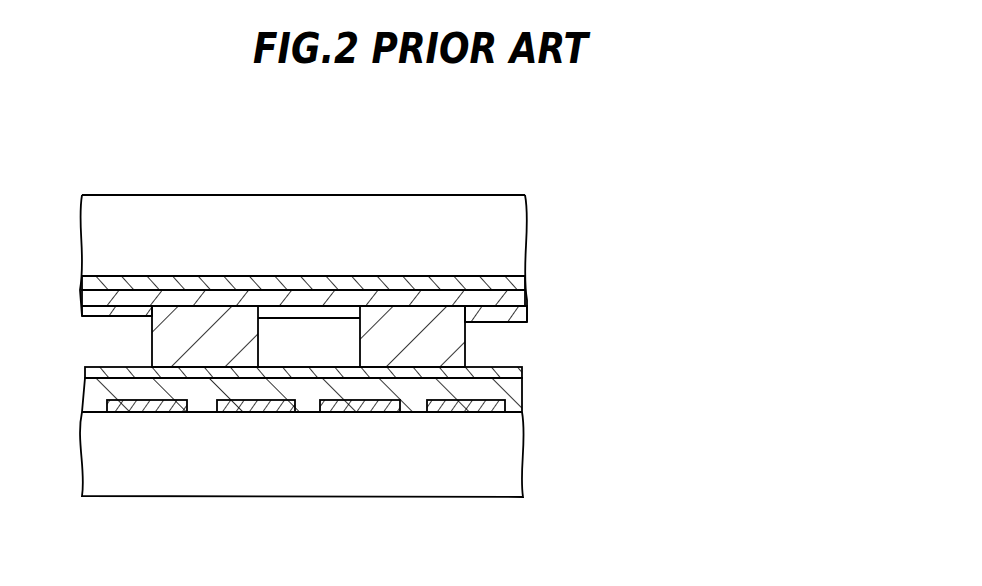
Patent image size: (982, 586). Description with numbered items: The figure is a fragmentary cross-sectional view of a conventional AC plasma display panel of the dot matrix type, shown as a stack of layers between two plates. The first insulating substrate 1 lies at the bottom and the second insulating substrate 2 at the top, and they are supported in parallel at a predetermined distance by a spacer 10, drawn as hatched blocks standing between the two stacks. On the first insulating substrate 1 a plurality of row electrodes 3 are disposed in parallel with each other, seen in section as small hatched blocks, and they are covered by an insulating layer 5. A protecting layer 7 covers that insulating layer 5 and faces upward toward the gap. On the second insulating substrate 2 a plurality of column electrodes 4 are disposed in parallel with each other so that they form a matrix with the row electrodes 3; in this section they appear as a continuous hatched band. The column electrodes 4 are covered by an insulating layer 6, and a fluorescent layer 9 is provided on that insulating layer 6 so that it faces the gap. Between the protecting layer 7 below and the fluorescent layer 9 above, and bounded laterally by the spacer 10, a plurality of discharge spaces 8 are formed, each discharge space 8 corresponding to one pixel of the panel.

The first insulating substrate 1 is at (504, 474).
The second insulating substrate 2 is at (500, 223).
The row electrode 3 is at (512, 418).
The column electrode 4 is at (505, 282).
The insulating layer 5 is at (515, 395).
The insulating layer 6 is at (520, 294).
The protecting layer 7 is at (470, 372).
The discharge space 8 is at (313, 333).
The fluorescent layer 9 is at (525, 314).
The spacer 10 is at (462, 340).